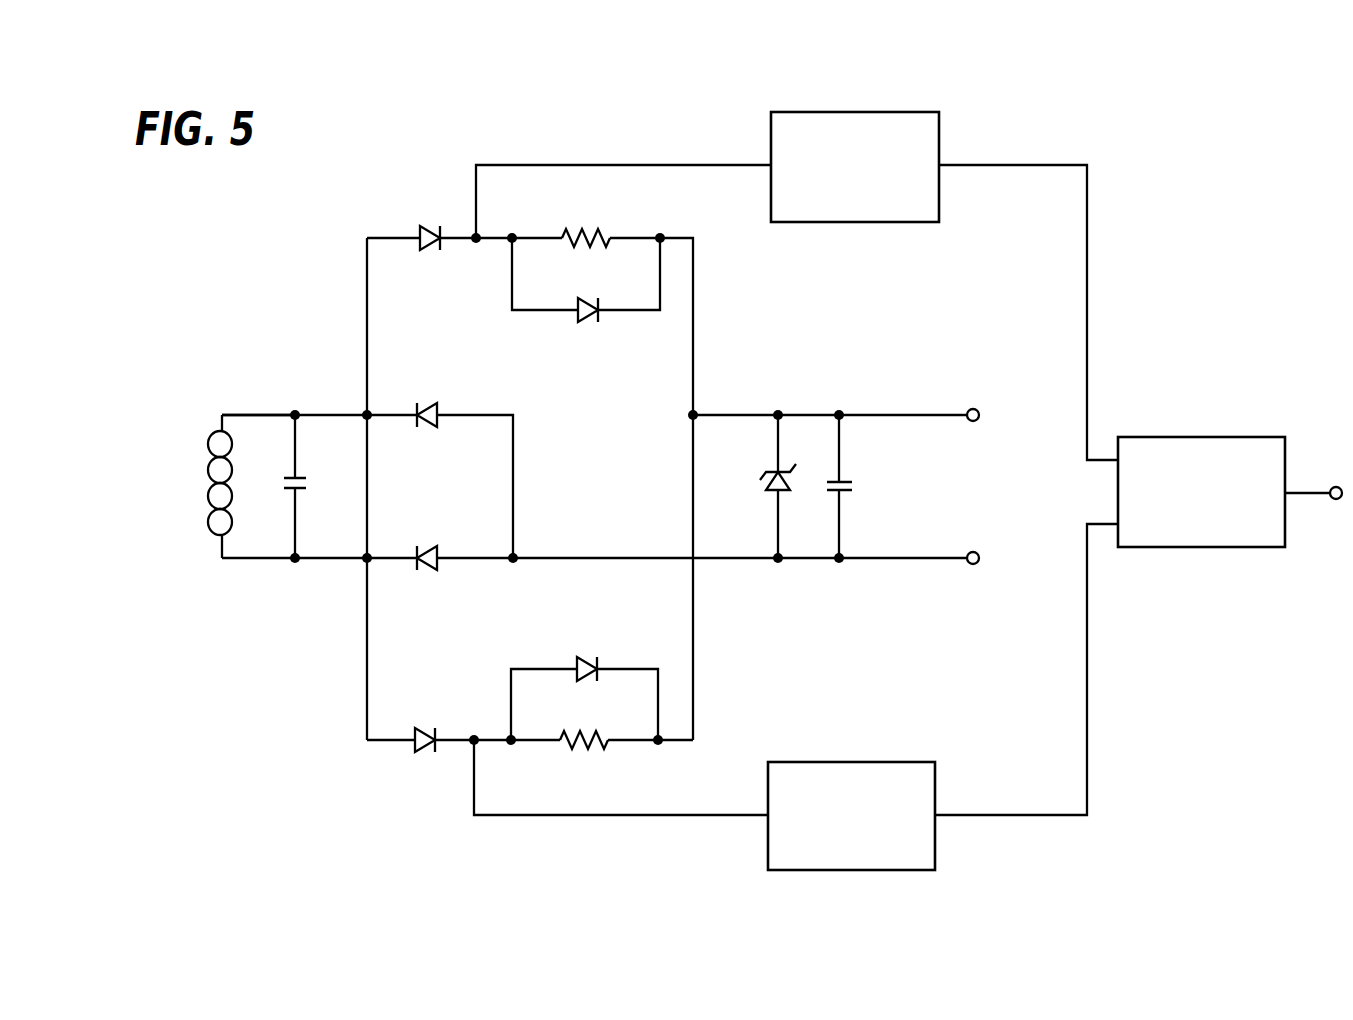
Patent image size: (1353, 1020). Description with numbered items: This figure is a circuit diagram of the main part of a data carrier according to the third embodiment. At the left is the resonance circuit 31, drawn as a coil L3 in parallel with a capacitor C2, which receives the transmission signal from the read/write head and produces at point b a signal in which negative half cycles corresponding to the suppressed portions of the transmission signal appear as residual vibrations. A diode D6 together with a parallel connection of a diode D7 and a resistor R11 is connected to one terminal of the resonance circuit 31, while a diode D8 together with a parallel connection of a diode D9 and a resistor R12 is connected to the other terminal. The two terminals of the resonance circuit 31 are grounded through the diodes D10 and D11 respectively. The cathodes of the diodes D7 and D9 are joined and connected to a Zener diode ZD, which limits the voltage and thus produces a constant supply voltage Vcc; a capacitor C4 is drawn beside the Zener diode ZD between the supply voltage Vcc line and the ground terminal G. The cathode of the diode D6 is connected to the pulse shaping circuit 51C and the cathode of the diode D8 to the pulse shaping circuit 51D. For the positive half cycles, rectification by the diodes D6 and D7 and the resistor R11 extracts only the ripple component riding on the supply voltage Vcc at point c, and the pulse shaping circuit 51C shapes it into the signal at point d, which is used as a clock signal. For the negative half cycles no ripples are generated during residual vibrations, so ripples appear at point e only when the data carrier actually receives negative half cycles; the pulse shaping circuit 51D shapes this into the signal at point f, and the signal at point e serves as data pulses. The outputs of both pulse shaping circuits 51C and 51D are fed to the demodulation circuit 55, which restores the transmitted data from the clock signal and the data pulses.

The coil (antenna inductor) L3 is at (213, 533).
The resonance circuit 31 is at (265, 533).
The capacitor C2 is at (306, 479).
The point b is at (255, 414).
The diode D6 is at (429, 219).
The diode D7 is at (586, 280).
The diode D8 is at (421, 721).
The diode D9 is at (584, 680).
The diode D10 is at (428, 393).
The diode D11 is at (428, 537).
The resistor R11 is at (586, 217).
The resistor R12 is at (584, 761).
The Zener diode ZD is at (758, 474).
The capacitor C4 is at (858, 486).
The supply voltage Vcc is at (997, 419).
The ground terminal G is at (986, 561).
The point c is at (657, 165).
The point d is at (1088, 243).
The point e is at (645, 816).
The point f is at (1088, 677).
The pulse shaping circuit 51C is at (913, 112).
The pulse shaping circuit 51D is at (910, 762).
The demodulation circuit 55 is at (1259, 437).